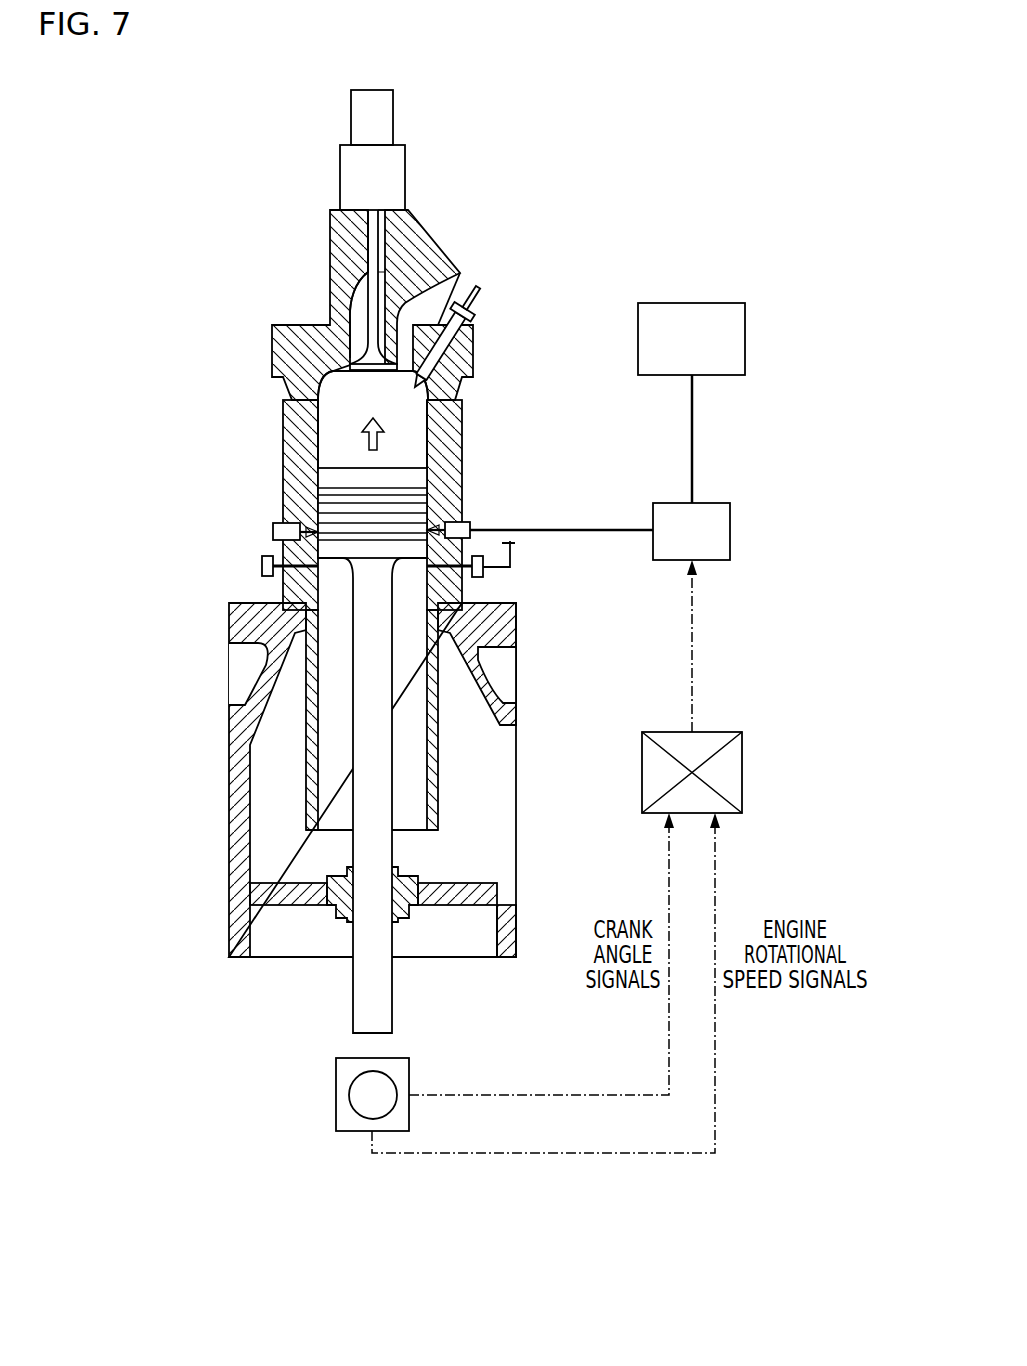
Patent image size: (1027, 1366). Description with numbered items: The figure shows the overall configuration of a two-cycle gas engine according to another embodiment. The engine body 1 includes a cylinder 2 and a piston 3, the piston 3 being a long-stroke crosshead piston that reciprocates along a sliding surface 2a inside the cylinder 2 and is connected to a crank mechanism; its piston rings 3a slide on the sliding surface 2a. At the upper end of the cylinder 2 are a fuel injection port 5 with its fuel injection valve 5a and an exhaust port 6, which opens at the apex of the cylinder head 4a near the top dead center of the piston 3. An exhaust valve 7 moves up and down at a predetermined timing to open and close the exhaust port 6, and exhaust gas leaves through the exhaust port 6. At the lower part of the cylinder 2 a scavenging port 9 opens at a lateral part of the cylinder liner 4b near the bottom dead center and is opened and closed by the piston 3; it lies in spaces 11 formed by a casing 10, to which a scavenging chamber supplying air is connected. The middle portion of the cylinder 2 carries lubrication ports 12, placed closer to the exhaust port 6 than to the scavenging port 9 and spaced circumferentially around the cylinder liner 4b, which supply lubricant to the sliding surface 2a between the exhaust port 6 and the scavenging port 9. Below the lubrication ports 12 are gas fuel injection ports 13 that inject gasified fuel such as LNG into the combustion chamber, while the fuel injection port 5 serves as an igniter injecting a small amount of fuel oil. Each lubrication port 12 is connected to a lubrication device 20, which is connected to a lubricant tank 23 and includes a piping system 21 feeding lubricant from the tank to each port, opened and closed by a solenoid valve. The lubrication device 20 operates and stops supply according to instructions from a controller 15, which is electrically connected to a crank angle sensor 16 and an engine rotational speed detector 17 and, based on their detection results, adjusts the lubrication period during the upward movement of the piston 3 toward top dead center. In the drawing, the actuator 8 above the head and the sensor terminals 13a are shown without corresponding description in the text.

The engine body 1 is at (216, 262).
The cylinder 2 is at (268, 446).
The sliding surface 2a is at (326, 594).
The piston 3 is at (430, 460).
The piston rings 3a is at (320, 533).
The cylinder head 4a is at (283, 340).
The cylinder liner 4b is at (283, 468).
The fuel injection port 5 is at (440, 347).
The fuel injection valve 5a is at (469, 301).
The exhaust port 6 is at (350, 348).
The exhaust valve 7 is at (350, 398).
The valve actuator 8 is at (353, 177).
The scavenging port 9 is at (312, 732).
The casing 10 is at (243, 622).
The spaces 11 is at (278, 812).
The lubrication ports 12 is at (273, 530).
The gas fuel injection ports 13 is at (285, 553).
The sensor terminal 13a is at (262, 563).
The controller 15 is at (714, 732).
The crank angle sensor 16 is at (392, 1077).
The engine rotational speed detector 17 is at (398, 1058).
The lubrication device 20 is at (707, 503).
The piping system 21 is at (570, 528).
The lubricant tank 23 is at (690, 303).